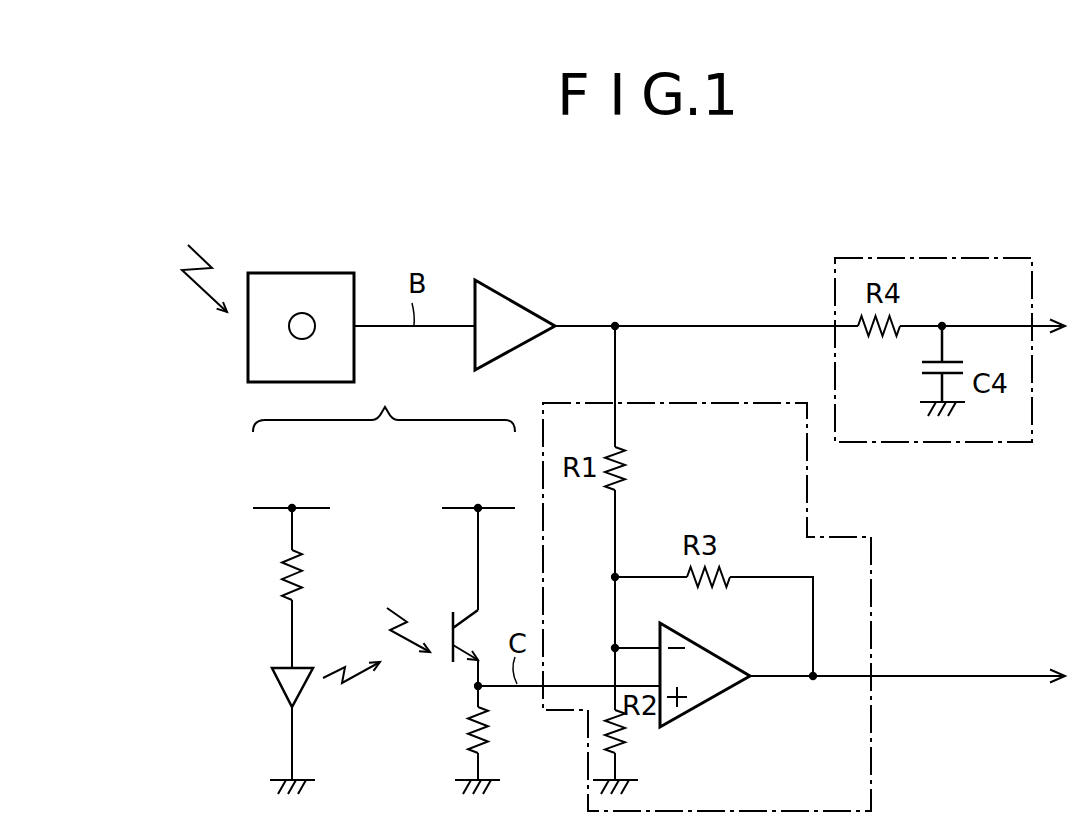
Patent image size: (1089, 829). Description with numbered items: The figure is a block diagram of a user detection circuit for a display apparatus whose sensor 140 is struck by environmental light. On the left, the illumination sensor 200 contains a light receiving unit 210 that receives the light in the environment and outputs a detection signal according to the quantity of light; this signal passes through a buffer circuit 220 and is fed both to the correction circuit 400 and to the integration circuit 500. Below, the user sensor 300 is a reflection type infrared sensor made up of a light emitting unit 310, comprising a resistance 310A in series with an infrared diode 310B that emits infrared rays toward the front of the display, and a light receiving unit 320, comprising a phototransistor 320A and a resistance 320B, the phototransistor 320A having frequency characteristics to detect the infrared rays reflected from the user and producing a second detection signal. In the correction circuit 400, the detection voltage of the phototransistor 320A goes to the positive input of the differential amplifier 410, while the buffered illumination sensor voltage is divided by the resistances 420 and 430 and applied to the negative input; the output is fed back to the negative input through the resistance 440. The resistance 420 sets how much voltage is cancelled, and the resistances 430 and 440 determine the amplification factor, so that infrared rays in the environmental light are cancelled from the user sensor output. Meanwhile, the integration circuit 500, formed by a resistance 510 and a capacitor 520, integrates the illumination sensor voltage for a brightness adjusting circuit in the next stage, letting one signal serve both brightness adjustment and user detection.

The sensor 140 is at (222, 235).
The illumination sensor 200 is at (308, 268).
The light receiving unit 210 is at (306, 320).
The buffer circuit 220 is at (527, 310).
The user sensor 300 is at (384, 406).
The light emitting unit 310 is at (300, 498).
The resistance 310A is at (278, 578).
The infrared diode 310B is at (278, 688).
The light receiving unit 320 is at (465, 498).
The phototransistor 320A is at (445, 620).
The resistance 320B is at (465, 733).
The correction circuit 400 is at (875, 548).
The differential amplifier 410 is at (705, 705).
The resistance 420 is at (622, 470).
The resistance 430 is at (627, 730).
The resistance 440 is at (718, 570).
The integration circuit 500 is at (991, 257).
The resistance 510 is at (897, 322).
The capacitor 520 is at (918, 368).